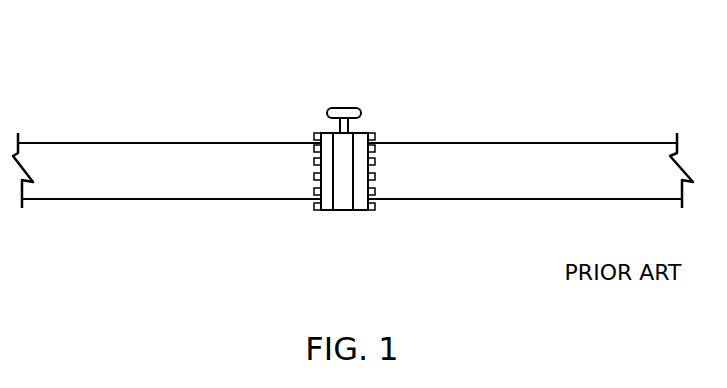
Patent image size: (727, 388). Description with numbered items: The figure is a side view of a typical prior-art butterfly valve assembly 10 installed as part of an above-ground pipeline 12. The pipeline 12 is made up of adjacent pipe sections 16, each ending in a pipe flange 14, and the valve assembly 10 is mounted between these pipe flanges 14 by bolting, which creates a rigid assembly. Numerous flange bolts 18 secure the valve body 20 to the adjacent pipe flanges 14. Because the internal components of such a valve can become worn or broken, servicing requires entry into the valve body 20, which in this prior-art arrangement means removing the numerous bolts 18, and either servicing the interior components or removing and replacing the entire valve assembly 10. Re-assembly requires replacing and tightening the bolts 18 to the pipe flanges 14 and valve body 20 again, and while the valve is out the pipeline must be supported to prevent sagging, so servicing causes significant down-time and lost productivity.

The butterfly valve assembly 10 is at (357, 75).
The pipeline 12 is at (177, 205).
The pipe flanges 14 is at (326, 210).
The pipe sections 16 is at (185, 180).
The flange bolts 18 is at (376, 137).
The valve body 20 is at (340, 202).